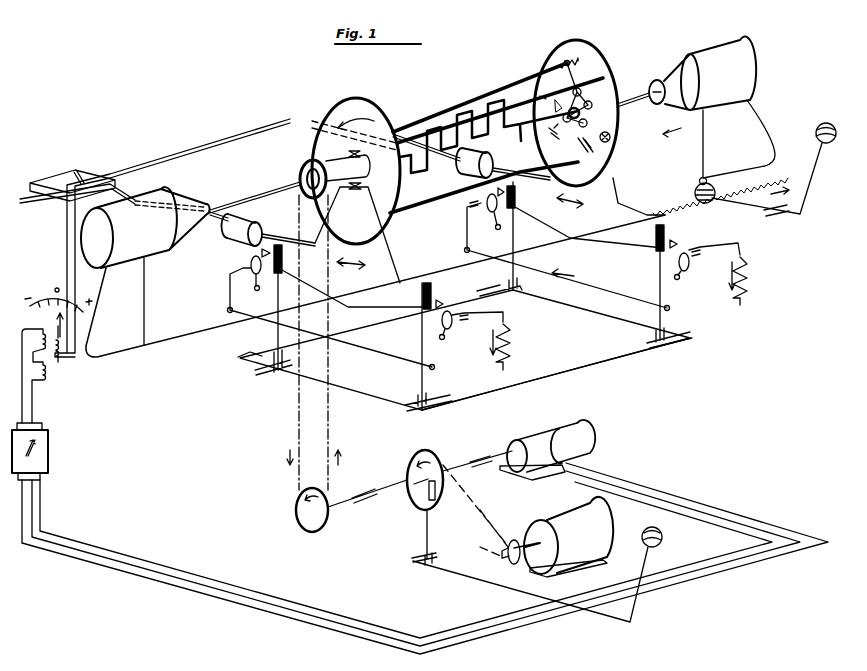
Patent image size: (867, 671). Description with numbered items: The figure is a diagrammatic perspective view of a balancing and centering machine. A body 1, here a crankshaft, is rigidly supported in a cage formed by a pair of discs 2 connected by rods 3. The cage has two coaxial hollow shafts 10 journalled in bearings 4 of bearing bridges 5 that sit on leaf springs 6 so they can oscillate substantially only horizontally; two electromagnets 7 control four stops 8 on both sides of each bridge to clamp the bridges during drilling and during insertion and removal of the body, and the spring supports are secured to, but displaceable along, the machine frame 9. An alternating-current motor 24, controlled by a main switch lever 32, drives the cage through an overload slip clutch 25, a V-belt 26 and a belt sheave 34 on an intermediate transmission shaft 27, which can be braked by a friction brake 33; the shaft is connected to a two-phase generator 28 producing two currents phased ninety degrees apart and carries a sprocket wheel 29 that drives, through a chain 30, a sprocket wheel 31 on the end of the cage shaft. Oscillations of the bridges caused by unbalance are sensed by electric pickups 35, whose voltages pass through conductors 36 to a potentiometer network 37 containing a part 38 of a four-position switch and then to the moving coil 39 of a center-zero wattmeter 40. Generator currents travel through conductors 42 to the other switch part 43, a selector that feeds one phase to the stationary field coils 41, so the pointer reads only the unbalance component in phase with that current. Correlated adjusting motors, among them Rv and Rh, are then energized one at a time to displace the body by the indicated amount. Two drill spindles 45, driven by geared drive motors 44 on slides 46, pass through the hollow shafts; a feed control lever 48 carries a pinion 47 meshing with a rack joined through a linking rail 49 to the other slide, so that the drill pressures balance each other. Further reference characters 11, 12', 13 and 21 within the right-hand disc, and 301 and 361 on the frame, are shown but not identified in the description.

The body 1 is at (418, 169).
The discs 2 is at (356, 98).
The rods 3 is at (440, 98).
The bearings 4 is at (366, 190).
The bearing bridges 5 is at (420, 275).
The leaf springs 6 is at (277, 297).
The electromagnets 7 is at (747, 280).
The stops 8 is at (258, 258).
The machine frame 9 is at (572, 372).
The hollow shafts 10 is at (348, 158).
The linkage 11 is at (560, 124).
The link pivots 12' is at (592, 95).
The lever 13 is at (587, 150).
The spring 21 is at (580, 60).
The alternating-current motor 24 is at (608, 532).
The overload slip clutch 25 is at (509, 559).
The V-belt 26 is at (500, 526).
The intermediate transmission shaft 27 is at (347, 502).
The two-phase generator 28 is at (560, 428).
The sprocket wheel 29 is at (311, 532).
The chain 30 is at (328, 424).
The sprocket wheel 31 is at (301, 176).
The main switch lever 32 is at (645, 559).
The friction brake 33 is at (437, 495).
The belt sheave 34 is at (407, 466).
The electric pickups 35 is at (485, 154).
The conductors 36 is at (190, 147).
The potentiometer network 37 is at (60, 173).
The switch part 38 is at (78, 171).
The moving coil 39 is at (62, 358).
The wattmeter 40 is at (46, 300).
The field coils 41 is at (43, 355).
The conductors 42 is at (184, 570).
The switch part 43 is at (48, 452).
The geared drive motors 44 is at (418, 152).
The drill spindles 45 is at (250, 197).
The slides 46 is at (733, 172).
The pinion 47 is at (706, 201).
The feed control lever 48 is at (812, 176).
The linking rail 49 is at (195, 332).
The platform 301 is at (573, 316).
The foot 361 is at (265, 366).
The adjusting motor Rv is at (543, 97).
The adjusting motor Rh is at (610, 138).